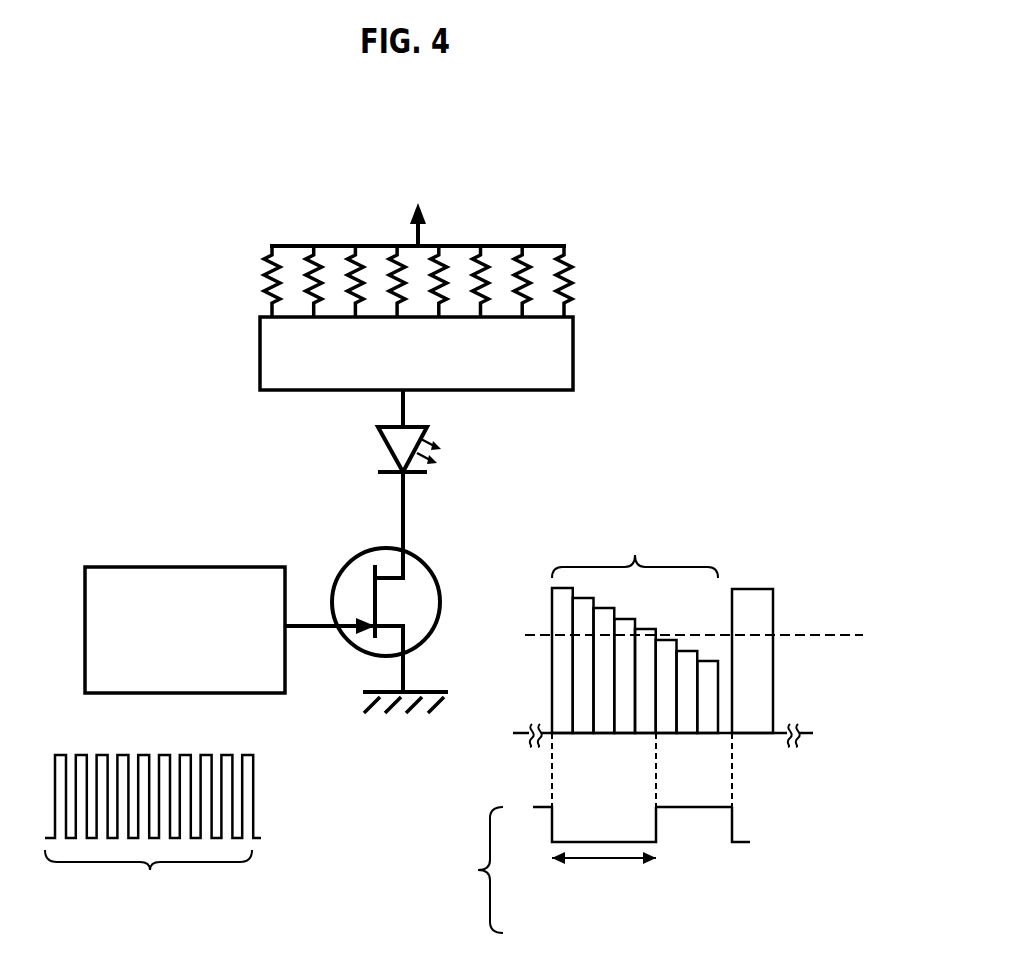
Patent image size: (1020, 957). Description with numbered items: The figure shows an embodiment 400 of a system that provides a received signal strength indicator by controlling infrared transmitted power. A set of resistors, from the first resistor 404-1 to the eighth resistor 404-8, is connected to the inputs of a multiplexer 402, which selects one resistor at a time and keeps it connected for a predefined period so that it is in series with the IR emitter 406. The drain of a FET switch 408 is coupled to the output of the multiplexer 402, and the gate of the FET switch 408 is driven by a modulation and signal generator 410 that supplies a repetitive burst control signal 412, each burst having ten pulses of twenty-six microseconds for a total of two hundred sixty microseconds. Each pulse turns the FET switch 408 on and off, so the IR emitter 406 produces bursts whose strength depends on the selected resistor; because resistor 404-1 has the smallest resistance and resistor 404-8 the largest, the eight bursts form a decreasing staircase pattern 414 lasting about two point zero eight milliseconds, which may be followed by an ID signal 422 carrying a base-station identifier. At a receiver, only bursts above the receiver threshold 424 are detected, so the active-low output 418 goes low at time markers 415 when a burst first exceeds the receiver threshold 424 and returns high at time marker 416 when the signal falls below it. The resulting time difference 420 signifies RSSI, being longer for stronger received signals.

The embodiment 400 is at (513, 55).
The multiplexer 402 is at (533, 382).
The resistor 404-1 is at (262, 268).
The resistor 404-8 is at (576, 268).
The IR emitter 406 is at (378, 430).
The FET switch 408 is at (342, 562).
The modulation and signal generator 410 is at (261, 686).
The repetitive burst control signal 412 is at (298, 820).
The staircase pattern 414 is at (703, 607).
The time markers 415 is at (553, 792).
The time marker 416 is at (657, 792).
The output 418 is at (588, 835).
The time difference 420 is at (575, 860).
The ID signal 422 is at (767, 712).
The receiver threshold 424 is at (851, 637).